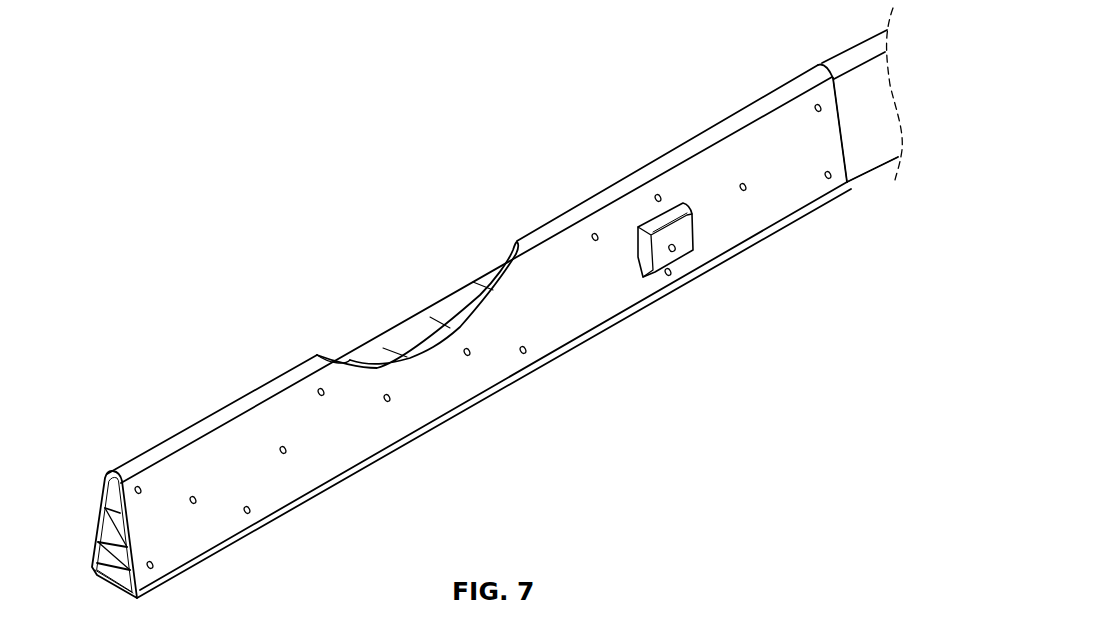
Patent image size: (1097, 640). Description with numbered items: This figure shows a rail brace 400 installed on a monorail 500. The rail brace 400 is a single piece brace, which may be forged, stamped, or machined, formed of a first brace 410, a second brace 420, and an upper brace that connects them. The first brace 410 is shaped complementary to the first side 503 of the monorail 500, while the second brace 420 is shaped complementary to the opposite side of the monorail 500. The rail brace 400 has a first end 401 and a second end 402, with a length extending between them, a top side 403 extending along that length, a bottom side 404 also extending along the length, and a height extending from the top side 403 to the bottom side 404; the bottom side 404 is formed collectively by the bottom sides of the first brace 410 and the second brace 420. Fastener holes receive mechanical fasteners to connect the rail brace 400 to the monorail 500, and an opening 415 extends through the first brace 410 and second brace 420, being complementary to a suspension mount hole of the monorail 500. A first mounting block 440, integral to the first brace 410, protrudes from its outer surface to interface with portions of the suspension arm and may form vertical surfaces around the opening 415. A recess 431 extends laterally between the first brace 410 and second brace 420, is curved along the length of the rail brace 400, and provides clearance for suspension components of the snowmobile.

The rail brace 400 is at (173, 72).
The first end 401 is at (833, 117).
The second end 402 is at (127, 567).
The top side 403 is at (237, 413).
The bottom side 404 is at (415, 438).
The first brace 410 is at (335, 428).
The opening 415 is at (675, 251).
The second brace 420 is at (194, 503).
The recess 431 is at (415, 338).
The first mounting block 440 is at (678, 237).
The monorail 500 is at (868, 80).
The first side 503 is at (852, 175).